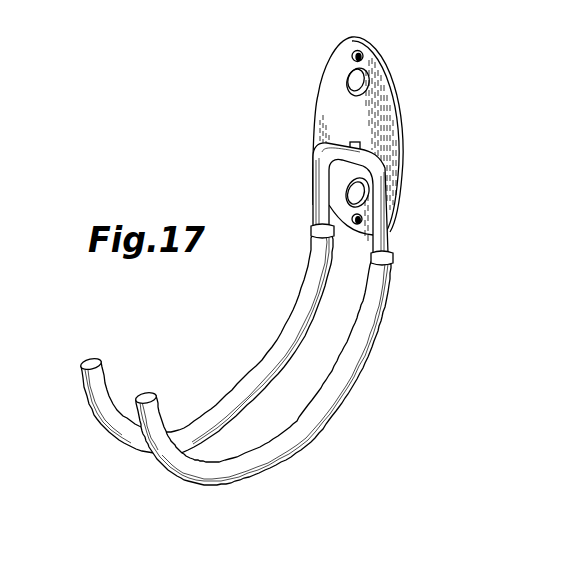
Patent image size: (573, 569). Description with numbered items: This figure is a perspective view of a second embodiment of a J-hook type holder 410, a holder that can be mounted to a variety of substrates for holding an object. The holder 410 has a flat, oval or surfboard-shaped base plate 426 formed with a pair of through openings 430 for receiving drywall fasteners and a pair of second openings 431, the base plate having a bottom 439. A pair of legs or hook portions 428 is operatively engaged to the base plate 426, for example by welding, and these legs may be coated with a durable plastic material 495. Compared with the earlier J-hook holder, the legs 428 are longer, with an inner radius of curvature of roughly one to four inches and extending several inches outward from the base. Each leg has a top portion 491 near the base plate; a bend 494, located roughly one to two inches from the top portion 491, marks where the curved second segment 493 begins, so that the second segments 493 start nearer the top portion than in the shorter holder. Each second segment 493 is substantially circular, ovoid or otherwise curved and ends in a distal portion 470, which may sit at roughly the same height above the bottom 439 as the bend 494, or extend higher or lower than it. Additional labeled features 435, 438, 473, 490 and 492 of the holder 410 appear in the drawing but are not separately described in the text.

The J hook type holder 410 is at (436, 106).
The base plate 426 is at (325, 108).
The legs or hook portions 428 is at (288, 327).
The through openings 430 is at (347, 80).
The second openings 431 is at (353, 54).
The plate body 435 is at (330, 146).
The plate upper end rim 438 is at (353, 37).
The bottom of base plate 439 is at (393, 258).
The distal portion 470 is at (110, 431).
The arm free end 473 is at (80, 375).
The plate lower edge 490 is at (320, 212).
The top portion of legs 491 is at (378, 163).
The clip leg 492 is at (320, 172).
The second segments 493 is at (270, 353).
The bend 494 is at (311, 256).
The durable plastic material 495 is at (234, 390).